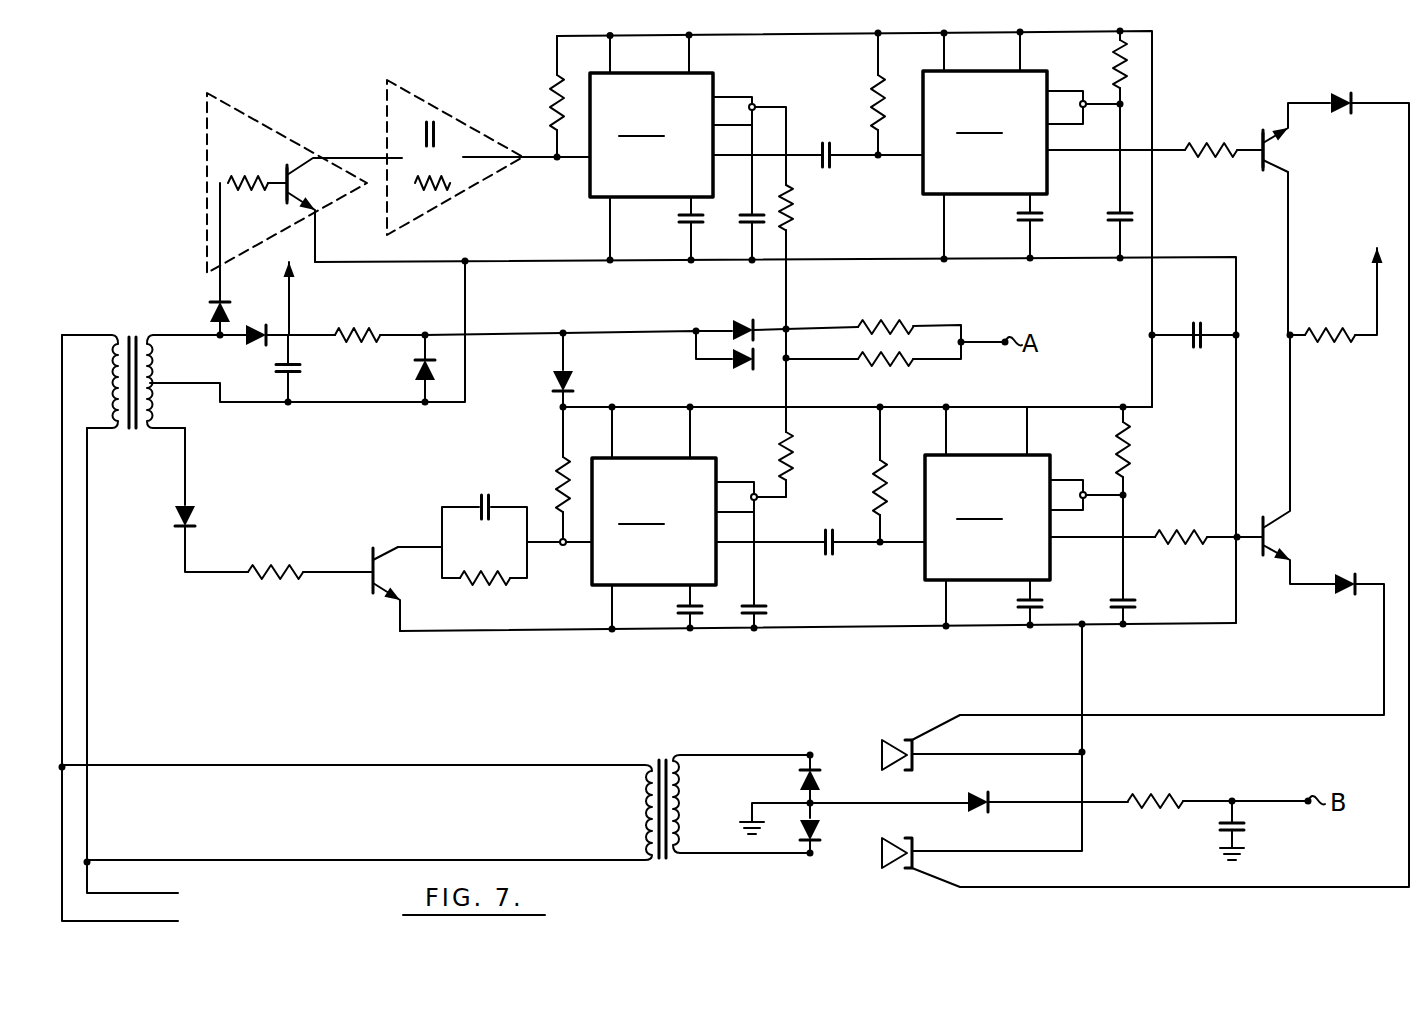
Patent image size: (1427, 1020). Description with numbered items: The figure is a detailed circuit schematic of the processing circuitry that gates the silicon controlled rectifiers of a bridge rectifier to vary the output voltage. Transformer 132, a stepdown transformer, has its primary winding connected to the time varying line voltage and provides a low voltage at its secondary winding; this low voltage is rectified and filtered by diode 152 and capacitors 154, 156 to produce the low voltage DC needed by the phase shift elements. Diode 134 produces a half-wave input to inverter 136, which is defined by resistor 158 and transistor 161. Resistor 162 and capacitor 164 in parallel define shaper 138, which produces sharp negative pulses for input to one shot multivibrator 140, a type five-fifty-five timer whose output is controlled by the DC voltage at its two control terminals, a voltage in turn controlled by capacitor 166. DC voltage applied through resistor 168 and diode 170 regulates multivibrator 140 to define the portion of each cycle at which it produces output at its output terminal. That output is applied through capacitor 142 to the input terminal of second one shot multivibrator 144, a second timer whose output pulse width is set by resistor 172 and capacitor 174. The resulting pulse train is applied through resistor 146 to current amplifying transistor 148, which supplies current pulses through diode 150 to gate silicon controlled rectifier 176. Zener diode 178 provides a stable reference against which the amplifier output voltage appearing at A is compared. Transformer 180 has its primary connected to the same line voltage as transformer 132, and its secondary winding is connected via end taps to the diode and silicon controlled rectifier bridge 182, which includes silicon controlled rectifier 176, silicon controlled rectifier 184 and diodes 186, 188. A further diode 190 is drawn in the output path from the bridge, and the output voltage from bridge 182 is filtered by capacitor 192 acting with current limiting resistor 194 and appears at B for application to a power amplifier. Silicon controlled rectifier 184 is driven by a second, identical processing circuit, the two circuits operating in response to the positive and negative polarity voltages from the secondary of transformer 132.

The transformer 132 is at (134, 431).
The diode 134 is at (213, 300).
The inverter 136 is at (243, 110).
The shaper 138 is at (418, 98).
The one shot multivibrator 140 is at (653, 329).
The capacitor 142 is at (822, 143).
The second one shot multivibrator 144 is at (986, 325).
The resistor 146 is at (1205, 142).
The current amplifying transistor 148 is at (1275, 145).
The diode 150 is at (1352, 100).
The diode 152 is at (258, 346).
The capacitor 154 is at (298, 372).
The capacitor 156 is at (1195, 325).
The resistor 158 is at (256, 178).
The transistor 161 is at (292, 177).
The resistor 162 is at (436, 198).
The capacitor 164 is at (437, 128).
The capacitor 166 is at (745, 217).
The resistor 168 is at (880, 322).
The diode 170 is at (752, 318).
The resistor 172 is at (1125, 68).
The capacitor 174 is at (1112, 213).
The silicon controlled rectifier 176 is at (897, 858).
The Zener diode 178 is at (432, 381).
The transformer 180 is at (661, 760).
The diode and silicon controlled rectifier bridge 182 is at (788, 862).
The silicon controlled rectifier 184 is at (882, 745).
The diode 186 is at (822, 826).
The diode 188 is at (818, 770).
The diode 190 is at (992, 800).
The capacitor 192 is at (1245, 825).
The current limiting resistor 194 is at (1155, 790).